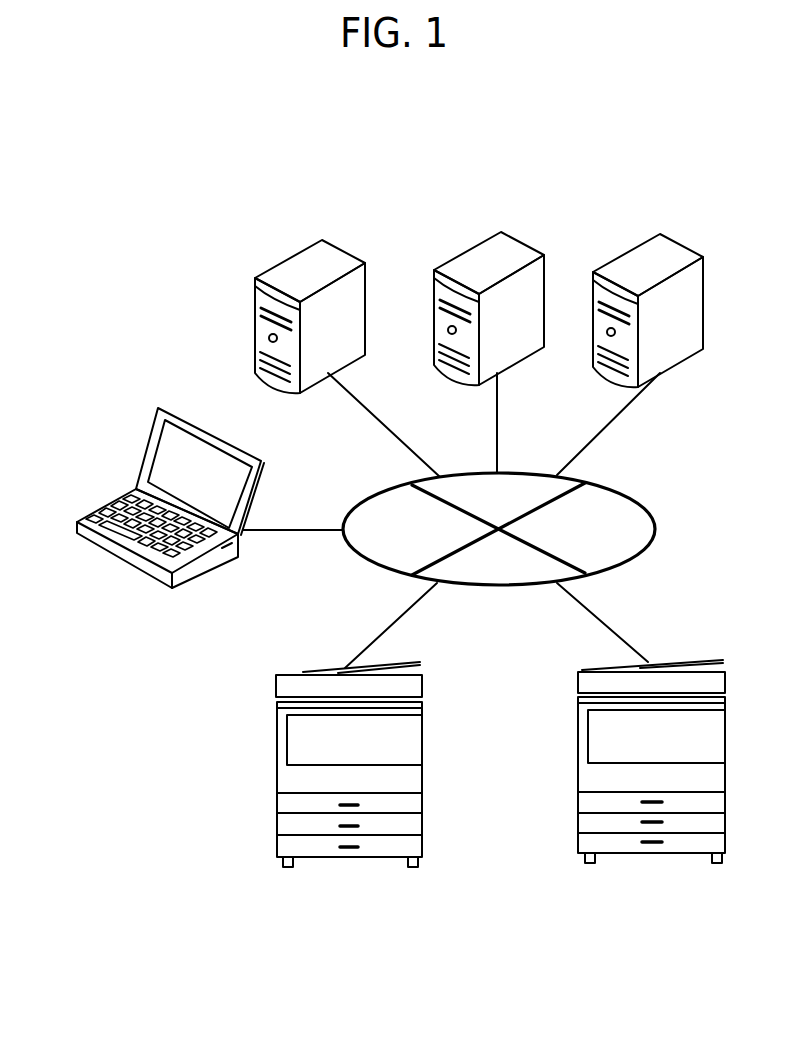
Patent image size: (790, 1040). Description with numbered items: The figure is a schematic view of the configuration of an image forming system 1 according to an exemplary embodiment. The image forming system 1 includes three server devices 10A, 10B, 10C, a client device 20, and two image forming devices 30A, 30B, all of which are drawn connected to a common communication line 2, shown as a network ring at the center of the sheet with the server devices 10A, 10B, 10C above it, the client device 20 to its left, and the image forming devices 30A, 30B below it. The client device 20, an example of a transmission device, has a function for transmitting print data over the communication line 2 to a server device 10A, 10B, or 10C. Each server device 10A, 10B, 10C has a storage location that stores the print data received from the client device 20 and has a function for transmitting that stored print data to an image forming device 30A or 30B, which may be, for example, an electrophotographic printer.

The image forming system 1 is at (140, 264).
The communication line 2 is at (623, 495).
The server device 10A is at (255, 280).
The server device 10B is at (435, 272).
The server device 10C is at (593, 275).
The client device 20 is at (262, 462).
The image forming device 30A is at (307, 672).
The image forming device 30B is at (687, 660).